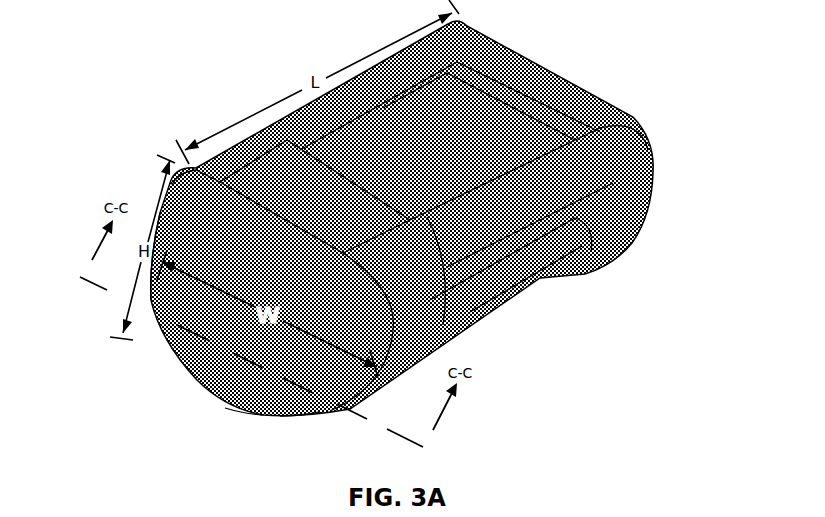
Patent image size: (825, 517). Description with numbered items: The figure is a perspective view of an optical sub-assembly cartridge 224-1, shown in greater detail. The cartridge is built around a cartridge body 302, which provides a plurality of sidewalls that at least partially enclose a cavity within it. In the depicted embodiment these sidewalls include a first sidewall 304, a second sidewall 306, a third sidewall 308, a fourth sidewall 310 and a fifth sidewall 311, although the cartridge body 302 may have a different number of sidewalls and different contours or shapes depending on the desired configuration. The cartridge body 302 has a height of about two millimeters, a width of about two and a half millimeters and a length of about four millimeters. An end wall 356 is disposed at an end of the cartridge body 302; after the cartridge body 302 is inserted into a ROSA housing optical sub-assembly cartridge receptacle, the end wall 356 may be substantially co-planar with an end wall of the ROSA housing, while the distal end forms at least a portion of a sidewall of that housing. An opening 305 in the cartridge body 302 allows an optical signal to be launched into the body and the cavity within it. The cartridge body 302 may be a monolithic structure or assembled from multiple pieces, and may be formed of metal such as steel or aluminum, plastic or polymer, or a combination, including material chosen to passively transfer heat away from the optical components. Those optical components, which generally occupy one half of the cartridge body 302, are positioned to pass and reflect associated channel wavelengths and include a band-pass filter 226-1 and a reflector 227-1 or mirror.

The cartridge body 302 is at (590, 100).
The end wall 356 is at (282, 290).
The second sidewall 306 is at (277, 122).
The third sidewall 308 is at (530, 58).
The band-pass filter 226-1 is at (538, 114).
The first sidewall 304 is at (614, 194).
The opening 305 is at (580, 233).
The reflector 227-1 is at (541, 282).
The optical sub-assembly cartridge 224-1 is at (146, 136).
The fourth sidewall 310 is at (241, 421).
The fifth sidewall 311 is at (298, 423).